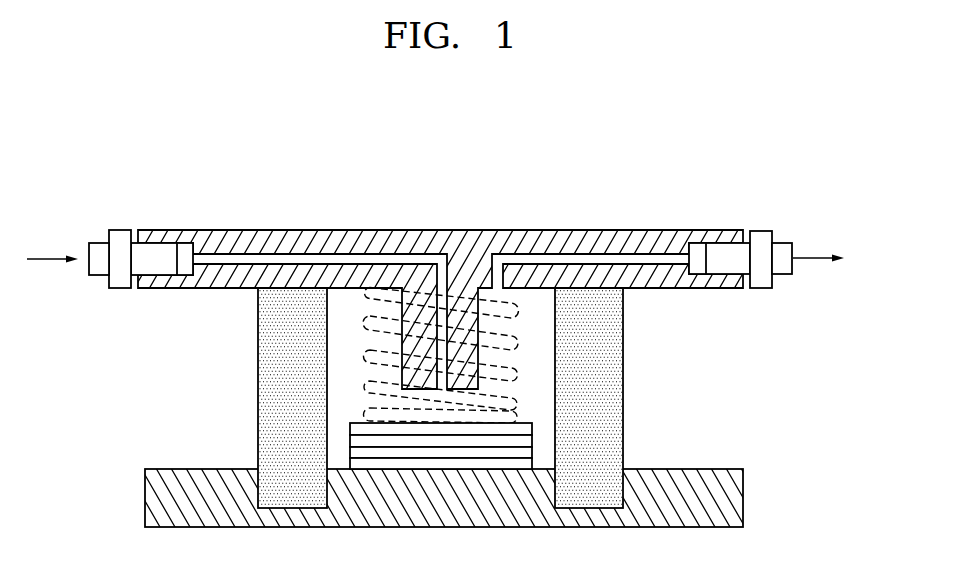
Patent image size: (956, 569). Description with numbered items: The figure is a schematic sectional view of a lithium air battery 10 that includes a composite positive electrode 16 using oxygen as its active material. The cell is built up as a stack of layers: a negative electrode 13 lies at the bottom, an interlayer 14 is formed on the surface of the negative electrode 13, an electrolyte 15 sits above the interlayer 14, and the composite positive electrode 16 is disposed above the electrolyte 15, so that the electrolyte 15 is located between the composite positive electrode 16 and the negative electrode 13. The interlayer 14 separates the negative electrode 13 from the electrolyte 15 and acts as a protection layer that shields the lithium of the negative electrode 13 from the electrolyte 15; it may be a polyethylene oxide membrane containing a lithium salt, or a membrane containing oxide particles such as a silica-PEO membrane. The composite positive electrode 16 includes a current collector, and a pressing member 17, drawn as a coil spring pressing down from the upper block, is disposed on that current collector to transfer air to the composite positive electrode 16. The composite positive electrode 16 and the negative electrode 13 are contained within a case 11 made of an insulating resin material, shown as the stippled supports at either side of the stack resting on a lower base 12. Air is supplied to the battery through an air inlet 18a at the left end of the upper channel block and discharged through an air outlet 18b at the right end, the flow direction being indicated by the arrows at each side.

The lithium air battery 10 is at (167, 202).
The case 11 is at (258, 381).
The base plate 12 is at (155, 498).
The negative electrode 13 is at (532, 465).
The interlayer 14 is at (532, 453).
The electrolyte 15 is at (532, 441).
The composite positive electrode 16 is at (532, 429).
The pressing member 17 is at (518, 342).
The air inlet 18a is at (101, 269).
The air outlet 18b is at (779, 271).